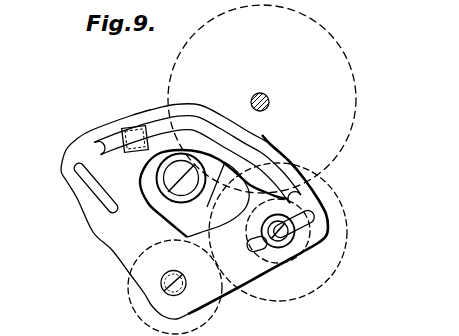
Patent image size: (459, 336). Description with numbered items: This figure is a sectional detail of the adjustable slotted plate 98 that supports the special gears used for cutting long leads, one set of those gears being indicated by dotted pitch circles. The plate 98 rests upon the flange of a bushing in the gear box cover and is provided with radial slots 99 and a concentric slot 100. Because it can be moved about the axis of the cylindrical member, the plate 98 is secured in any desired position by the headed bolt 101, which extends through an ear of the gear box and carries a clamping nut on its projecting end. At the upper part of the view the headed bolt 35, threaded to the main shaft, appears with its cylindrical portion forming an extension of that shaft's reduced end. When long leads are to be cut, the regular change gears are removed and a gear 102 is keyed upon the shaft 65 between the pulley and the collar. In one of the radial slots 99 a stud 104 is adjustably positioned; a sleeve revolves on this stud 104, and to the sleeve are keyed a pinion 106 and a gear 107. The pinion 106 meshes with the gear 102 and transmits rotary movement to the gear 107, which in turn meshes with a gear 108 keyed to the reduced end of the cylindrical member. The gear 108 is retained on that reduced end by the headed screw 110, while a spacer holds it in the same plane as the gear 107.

The headed bolt 35 is at (187, 194).
The shaft 65 is at (270, 98).
The plate 98 is at (112, 240).
The radial slots 99 is at (95, 192).
The concentric slot 100 is at (157, 130).
The headed bolt 101 is at (123, 128).
The gear 102 is at (357, 105).
The stud 104 is at (307, 246).
The pinion 106 is at (340, 270).
The gear 107 is at (318, 296).
The gear 108 is at (236, 303).
The headed screw 110 is at (161, 284).